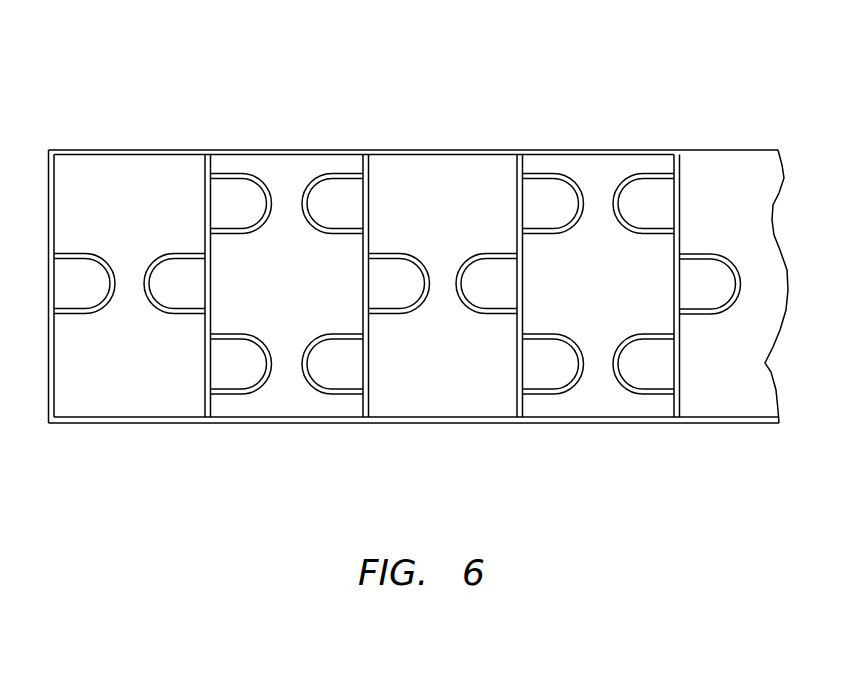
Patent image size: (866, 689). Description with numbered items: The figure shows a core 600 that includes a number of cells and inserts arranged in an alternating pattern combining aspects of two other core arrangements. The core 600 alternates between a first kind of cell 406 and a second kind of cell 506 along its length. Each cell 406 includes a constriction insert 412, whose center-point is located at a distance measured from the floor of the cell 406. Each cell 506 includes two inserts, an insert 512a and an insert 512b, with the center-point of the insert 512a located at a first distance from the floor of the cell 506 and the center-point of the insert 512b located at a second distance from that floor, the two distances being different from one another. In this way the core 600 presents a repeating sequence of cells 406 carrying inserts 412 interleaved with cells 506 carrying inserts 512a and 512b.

The core 600 is at (748, 77).
The cell 406 is at (397, 292).
The cell 506 is at (443, 286).
The constriction insert 412 is at (168, 313).
The insert 512a is at (340, 395).
The insert 512b is at (340, 173).